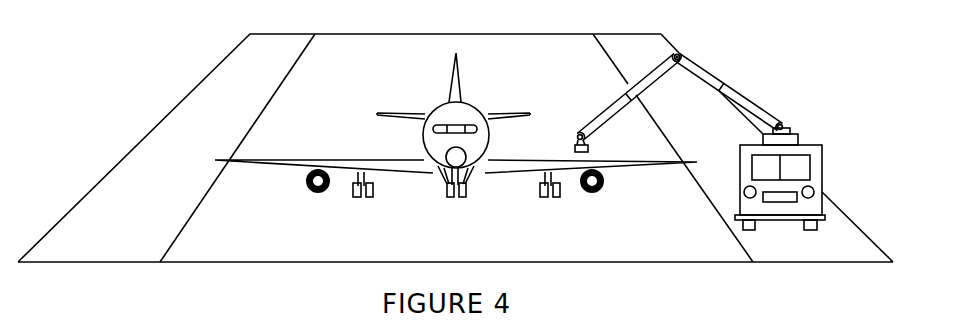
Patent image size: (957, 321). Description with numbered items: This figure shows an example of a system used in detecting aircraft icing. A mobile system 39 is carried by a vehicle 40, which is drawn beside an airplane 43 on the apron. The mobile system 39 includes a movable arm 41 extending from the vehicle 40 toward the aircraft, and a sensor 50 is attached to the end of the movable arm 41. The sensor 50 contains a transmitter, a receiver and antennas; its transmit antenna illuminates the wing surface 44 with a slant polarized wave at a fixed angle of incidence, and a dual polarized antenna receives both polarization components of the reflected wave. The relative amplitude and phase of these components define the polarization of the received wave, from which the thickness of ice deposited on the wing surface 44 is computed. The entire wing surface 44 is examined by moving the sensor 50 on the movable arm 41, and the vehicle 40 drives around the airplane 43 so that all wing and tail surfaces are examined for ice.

The mobile system 39 is at (865, 111).
The vehicle 40 is at (823, 168).
The movable arm 41 is at (719, 74).
The airplane 43 is at (424, 141).
The wing surface 44 is at (547, 157).
The sensor 50 is at (574, 141).